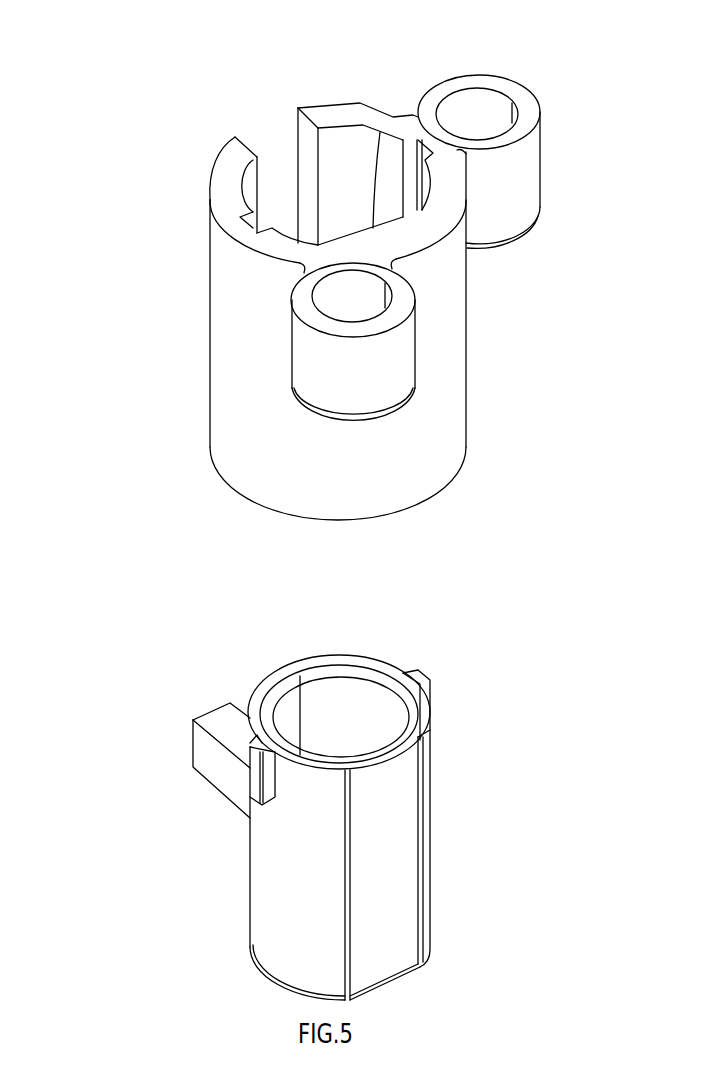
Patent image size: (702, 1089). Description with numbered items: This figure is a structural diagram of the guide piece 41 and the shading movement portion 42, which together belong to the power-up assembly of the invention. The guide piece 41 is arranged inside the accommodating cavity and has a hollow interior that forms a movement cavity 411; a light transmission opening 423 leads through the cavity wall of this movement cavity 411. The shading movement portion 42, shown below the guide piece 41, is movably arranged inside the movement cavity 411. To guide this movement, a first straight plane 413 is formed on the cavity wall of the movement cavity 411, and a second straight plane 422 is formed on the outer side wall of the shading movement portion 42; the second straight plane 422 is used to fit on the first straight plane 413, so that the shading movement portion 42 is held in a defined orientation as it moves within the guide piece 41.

The guide piece 41 is at (237, 308).
The movement cavity 411 is at (337, 163).
The first straight plane 413 is at (379, 133).
The light transmission opening 423 is at (270, 182).
The shading movement portion 42 is at (265, 683).
The second straight plane 422 is at (402, 825).